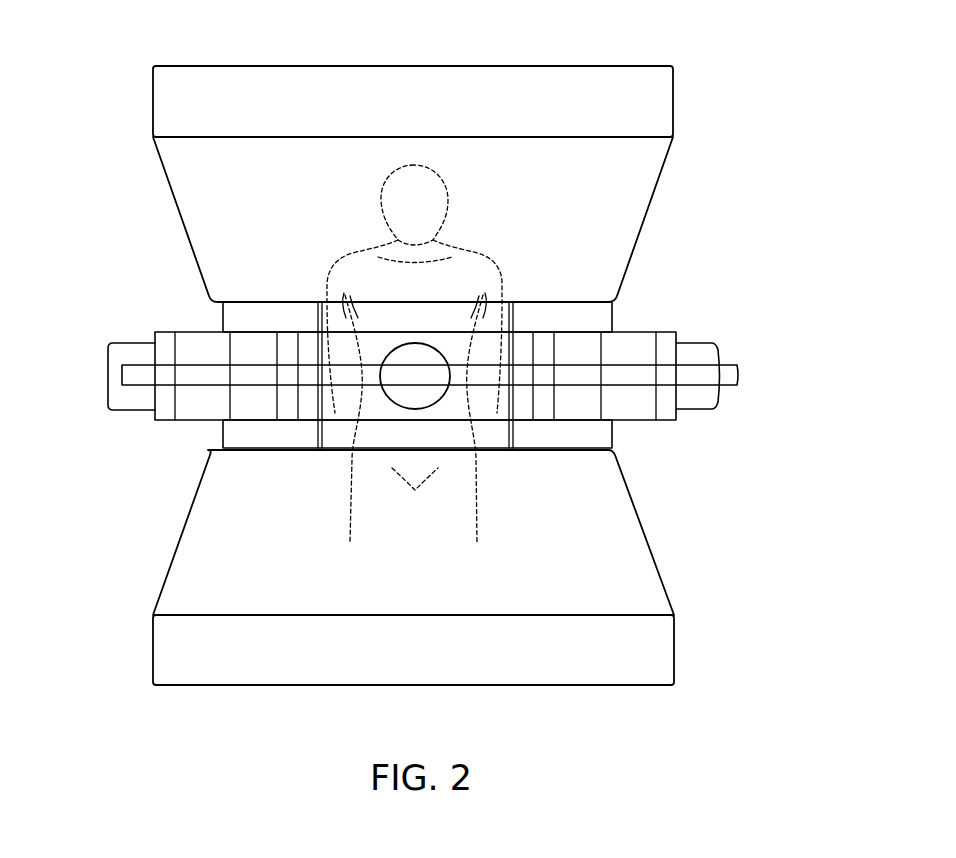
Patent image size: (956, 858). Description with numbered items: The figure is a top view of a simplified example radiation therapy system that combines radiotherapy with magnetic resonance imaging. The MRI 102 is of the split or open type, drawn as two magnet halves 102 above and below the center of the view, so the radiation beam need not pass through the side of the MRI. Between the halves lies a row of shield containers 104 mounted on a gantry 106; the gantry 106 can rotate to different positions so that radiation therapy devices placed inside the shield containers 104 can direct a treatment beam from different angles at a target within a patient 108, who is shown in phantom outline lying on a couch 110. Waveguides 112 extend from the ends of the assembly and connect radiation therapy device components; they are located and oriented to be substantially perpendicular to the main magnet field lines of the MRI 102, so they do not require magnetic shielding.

The MRI 102 is at (156, 103).
The shield containers 104 is at (141, 347).
The gantry 106 is at (694, 397).
The patient 108 is at (433, 173).
The couch 110 is at (515, 307).
The waveguides 112 is at (113, 408).